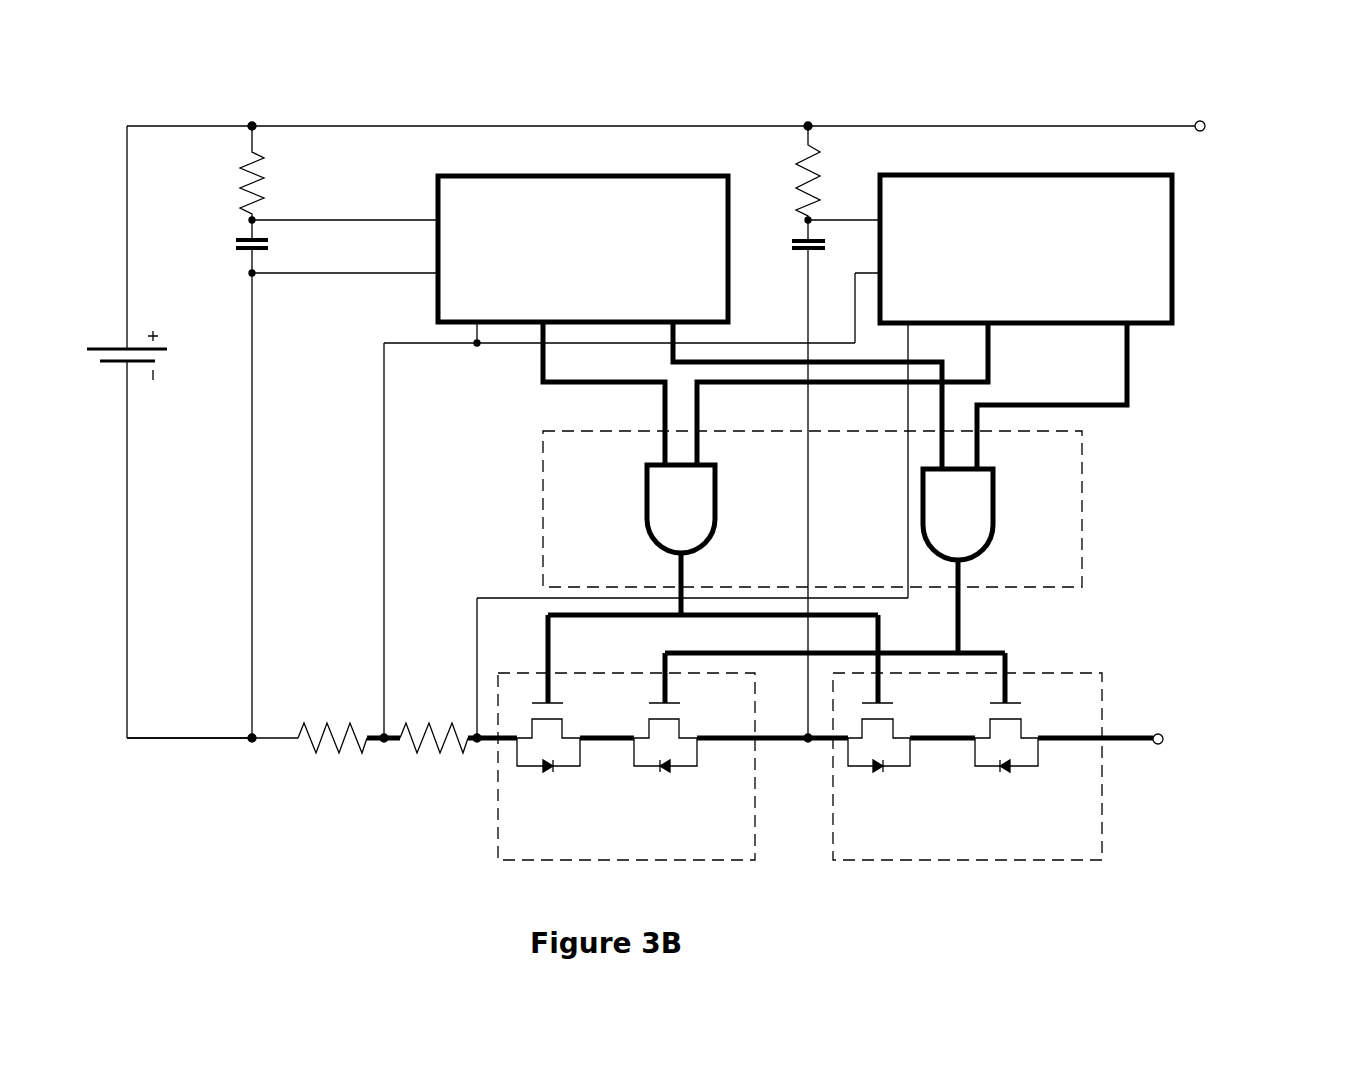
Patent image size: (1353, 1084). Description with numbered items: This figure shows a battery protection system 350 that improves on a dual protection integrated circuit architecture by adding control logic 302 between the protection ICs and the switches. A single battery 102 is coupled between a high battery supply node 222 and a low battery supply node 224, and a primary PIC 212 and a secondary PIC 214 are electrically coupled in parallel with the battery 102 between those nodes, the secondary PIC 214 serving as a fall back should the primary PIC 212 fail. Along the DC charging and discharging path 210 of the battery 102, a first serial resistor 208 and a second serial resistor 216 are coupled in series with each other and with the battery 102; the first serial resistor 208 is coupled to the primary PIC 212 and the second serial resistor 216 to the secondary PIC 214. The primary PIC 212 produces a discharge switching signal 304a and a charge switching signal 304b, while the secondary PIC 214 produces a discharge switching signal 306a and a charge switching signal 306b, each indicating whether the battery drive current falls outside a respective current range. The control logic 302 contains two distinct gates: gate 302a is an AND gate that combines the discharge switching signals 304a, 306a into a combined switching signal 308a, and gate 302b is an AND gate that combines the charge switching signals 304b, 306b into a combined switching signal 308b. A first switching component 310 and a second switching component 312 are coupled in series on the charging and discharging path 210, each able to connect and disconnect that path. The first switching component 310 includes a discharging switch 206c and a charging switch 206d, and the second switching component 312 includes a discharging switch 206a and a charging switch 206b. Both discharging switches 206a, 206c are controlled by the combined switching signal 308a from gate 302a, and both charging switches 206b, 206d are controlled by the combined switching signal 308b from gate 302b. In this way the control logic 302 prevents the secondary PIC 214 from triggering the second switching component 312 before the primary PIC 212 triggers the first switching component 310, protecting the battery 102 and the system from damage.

The battery protection system 350 is at (1244, 96).
The battery 102 is at (110, 343).
The DC charging and discharging path 210 is at (189, 754).
The first serial resistor 208 is at (345, 748).
The second serial resistor 216 is at (431, 750).
The high battery supply node 222 is at (1203, 131).
The low battery supply node 224 is at (1161, 744).
The secondary PIC 214 is at (583, 249).
The primary PIC 212 is at (1026, 249).
The control logic 302 is at (812, 509).
The gate 302a is at (681, 509).
The gate 302b is at (958, 514).
The discharge switching signal 304a is at (871, 394).
The charge switching signal 304b is at (1081, 396).
The discharge switching signal 306a is at (582, 394).
The charge switching signal 306b is at (940, 450).
The combined switching signal 308a is at (676, 576).
The combined switching signal 308b is at (962, 580).
The second switching component 312 is at (626, 766).
The first switching component 310 is at (967, 766).
The discharging switch 206a is at (548, 754).
The charging switch 206b is at (665, 754).
The discharging switch 206c is at (879, 754).
The charging switch 206d is at (1006, 754).